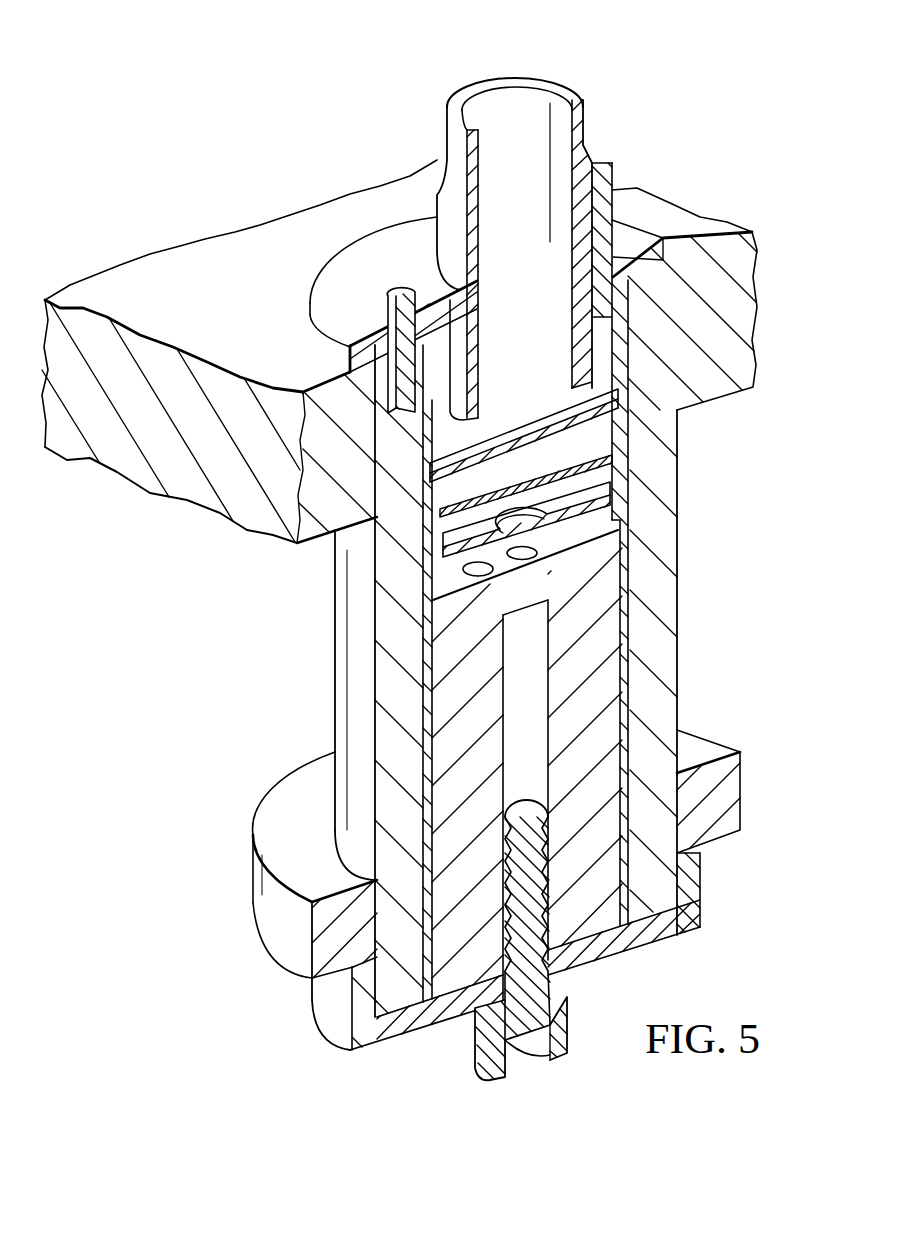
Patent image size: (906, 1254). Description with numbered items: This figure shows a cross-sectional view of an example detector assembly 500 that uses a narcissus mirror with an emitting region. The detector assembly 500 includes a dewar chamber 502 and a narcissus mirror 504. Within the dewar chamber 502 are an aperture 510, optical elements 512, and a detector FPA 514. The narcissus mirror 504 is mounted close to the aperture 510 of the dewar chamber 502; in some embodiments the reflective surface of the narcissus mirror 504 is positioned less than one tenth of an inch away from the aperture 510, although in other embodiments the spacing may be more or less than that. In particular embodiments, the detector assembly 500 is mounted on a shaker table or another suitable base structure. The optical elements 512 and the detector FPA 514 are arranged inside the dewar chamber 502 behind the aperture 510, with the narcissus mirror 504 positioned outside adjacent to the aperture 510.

The detector assembly 500 is at (314, 72).
The dewar chamber 502 is at (412, 510).
The narcissus mirror 504 is at (617, 590).
The aperture 510 is at (408, 562).
The optical elements 512 is at (457, 552).
The detector FPA 514 is at (445, 445).